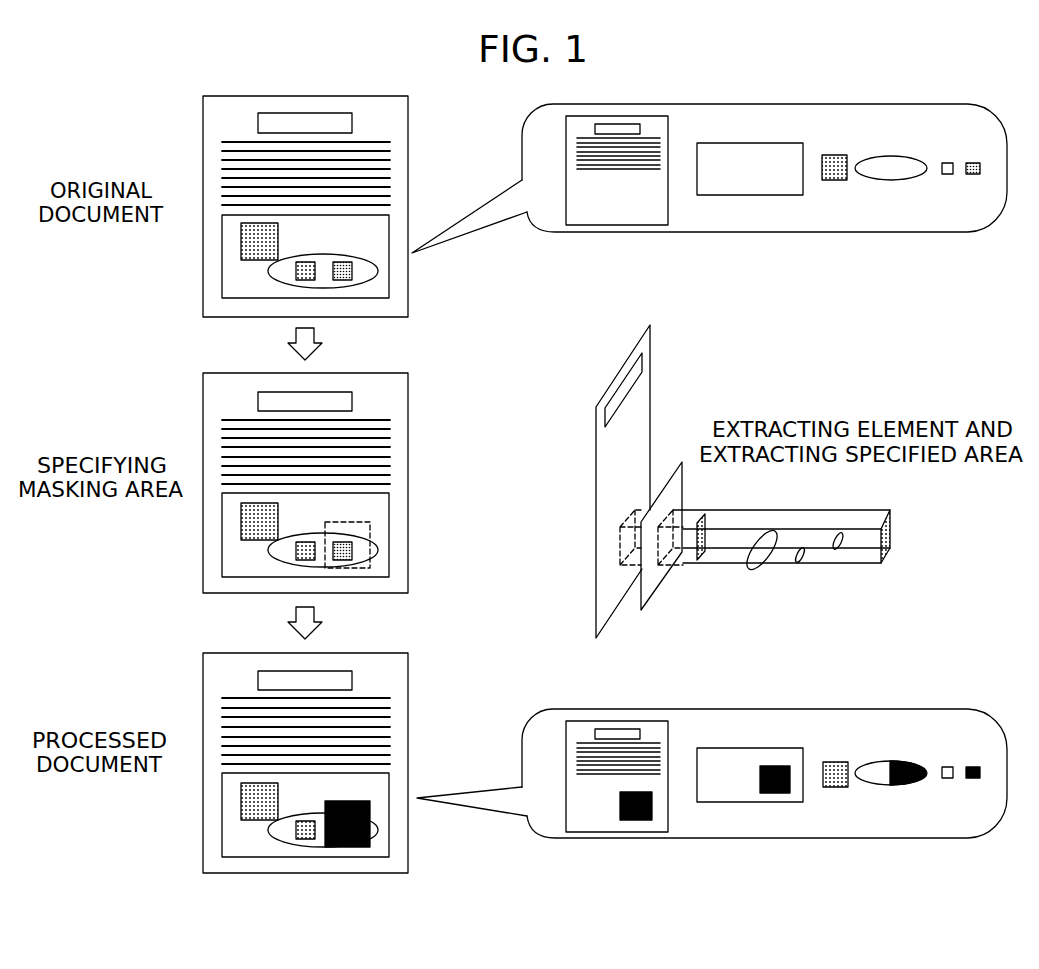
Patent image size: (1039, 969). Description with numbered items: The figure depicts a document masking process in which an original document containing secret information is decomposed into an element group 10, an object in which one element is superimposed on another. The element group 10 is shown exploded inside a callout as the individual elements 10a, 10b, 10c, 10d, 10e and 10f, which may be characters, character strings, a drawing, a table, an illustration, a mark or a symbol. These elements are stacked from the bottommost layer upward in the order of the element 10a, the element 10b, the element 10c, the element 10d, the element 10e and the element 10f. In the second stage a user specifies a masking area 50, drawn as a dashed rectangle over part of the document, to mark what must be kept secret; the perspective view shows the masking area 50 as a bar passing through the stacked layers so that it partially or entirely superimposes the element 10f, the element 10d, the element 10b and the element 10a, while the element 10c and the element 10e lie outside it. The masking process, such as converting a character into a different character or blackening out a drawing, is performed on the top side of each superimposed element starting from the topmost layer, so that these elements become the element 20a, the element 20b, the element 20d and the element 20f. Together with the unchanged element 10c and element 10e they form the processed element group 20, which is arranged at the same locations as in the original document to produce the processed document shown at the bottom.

The element group 10 is at (643, 103).
The element 10a is at (409, 108).
The element 10b is at (389, 215).
The element 10c is at (248, 260).
The element 10d is at (317, 254).
The element 10e is at (315, 274).
The element 10f is at (352, 272).
The masking area 50 is at (371, 543).
The processed element group 20 is at (643, 708).
The element 20a is at (409, 666).
The element 20b is at (389, 773).
The element 20d is at (298, 813).
The element 20f is at (974, 778).